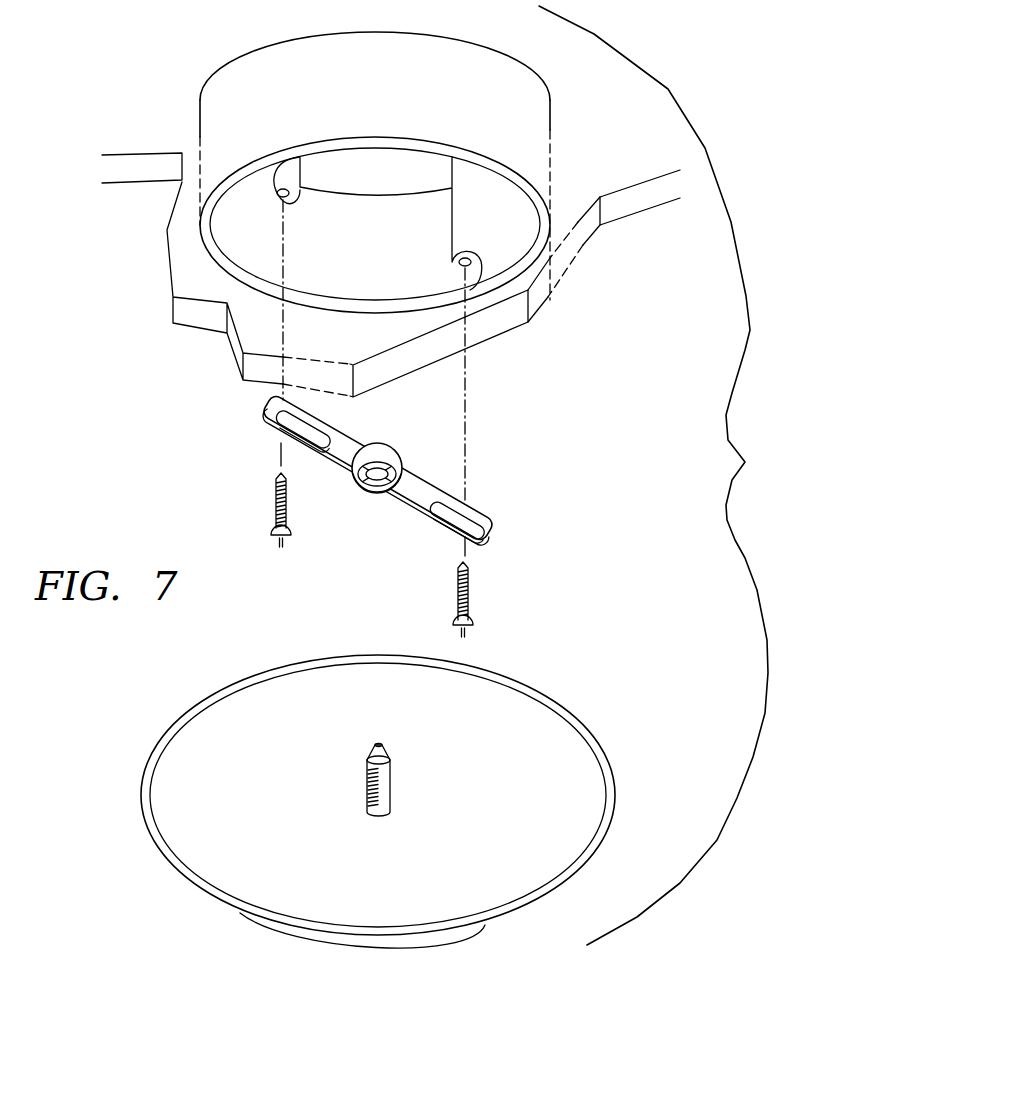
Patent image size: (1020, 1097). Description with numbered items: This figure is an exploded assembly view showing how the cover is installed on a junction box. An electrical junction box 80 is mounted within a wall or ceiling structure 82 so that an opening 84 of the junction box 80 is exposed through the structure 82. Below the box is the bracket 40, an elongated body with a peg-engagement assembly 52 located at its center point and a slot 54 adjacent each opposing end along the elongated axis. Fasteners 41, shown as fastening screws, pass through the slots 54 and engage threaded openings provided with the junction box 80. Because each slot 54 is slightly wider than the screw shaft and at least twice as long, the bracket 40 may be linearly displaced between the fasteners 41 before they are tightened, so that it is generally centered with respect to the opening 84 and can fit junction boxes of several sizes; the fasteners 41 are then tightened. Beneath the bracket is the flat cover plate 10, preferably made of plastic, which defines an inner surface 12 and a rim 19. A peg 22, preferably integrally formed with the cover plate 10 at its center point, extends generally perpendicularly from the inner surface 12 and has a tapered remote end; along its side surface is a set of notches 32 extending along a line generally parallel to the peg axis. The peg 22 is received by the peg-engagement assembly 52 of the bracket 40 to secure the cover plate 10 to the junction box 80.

The cover plate 10 is at (415, 782).
The inner surface 12 is at (378, 805).
The rim 19 is at (583, 866).
The peg 22 is at (378, 780).
The notches 32 is at (368, 784).
The bracket 40 is at (384, 495).
The fasteners 41 is at (284, 506).
The peg-engagement assembly 52 is at (384, 447).
The slot 54 is at (442, 520).
The electrical junction box 80 is at (547, 132).
The wall or ceiling structure 82 is at (629, 202).
The opening 84 is at (253, 333).